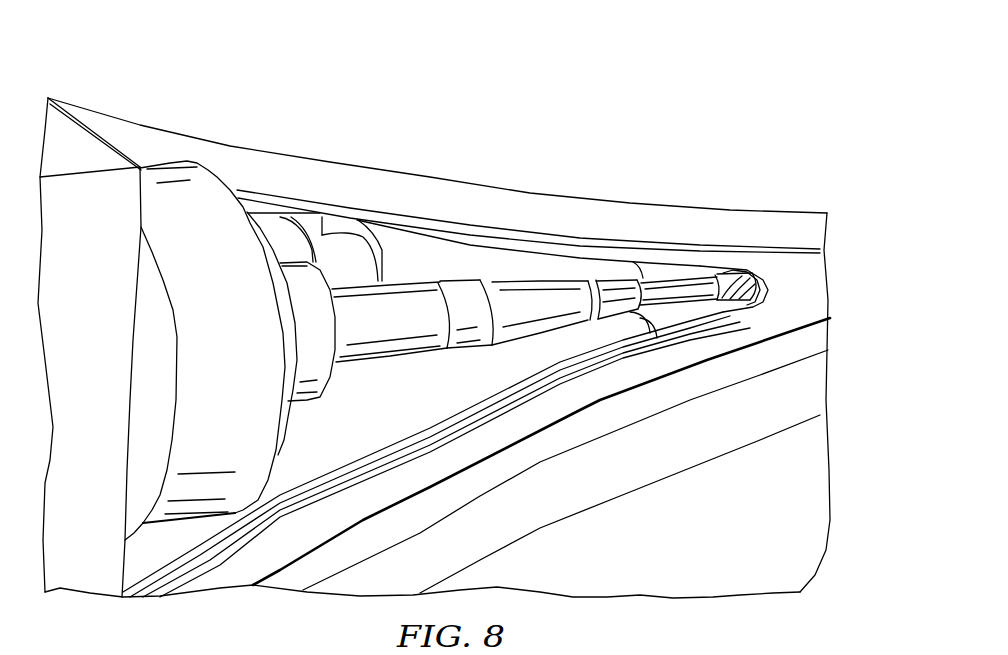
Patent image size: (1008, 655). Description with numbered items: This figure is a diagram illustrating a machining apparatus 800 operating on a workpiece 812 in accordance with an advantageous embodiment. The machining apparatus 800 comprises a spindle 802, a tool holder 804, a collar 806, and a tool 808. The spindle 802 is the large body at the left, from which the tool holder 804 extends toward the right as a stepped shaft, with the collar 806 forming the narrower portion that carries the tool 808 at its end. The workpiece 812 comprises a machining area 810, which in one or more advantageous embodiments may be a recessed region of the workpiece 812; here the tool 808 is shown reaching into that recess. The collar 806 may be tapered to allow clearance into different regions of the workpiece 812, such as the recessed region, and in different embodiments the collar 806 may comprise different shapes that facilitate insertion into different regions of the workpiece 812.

The machining apparatus 800 is at (303, 67).
The spindle 802 is at (168, 345).
The tool holder 804 is at (434, 265).
The collar 806 is at (652, 235).
The tool 808 is at (742, 226).
The machining area 810 is at (793, 289).
The workpiece 812 is at (570, 455).